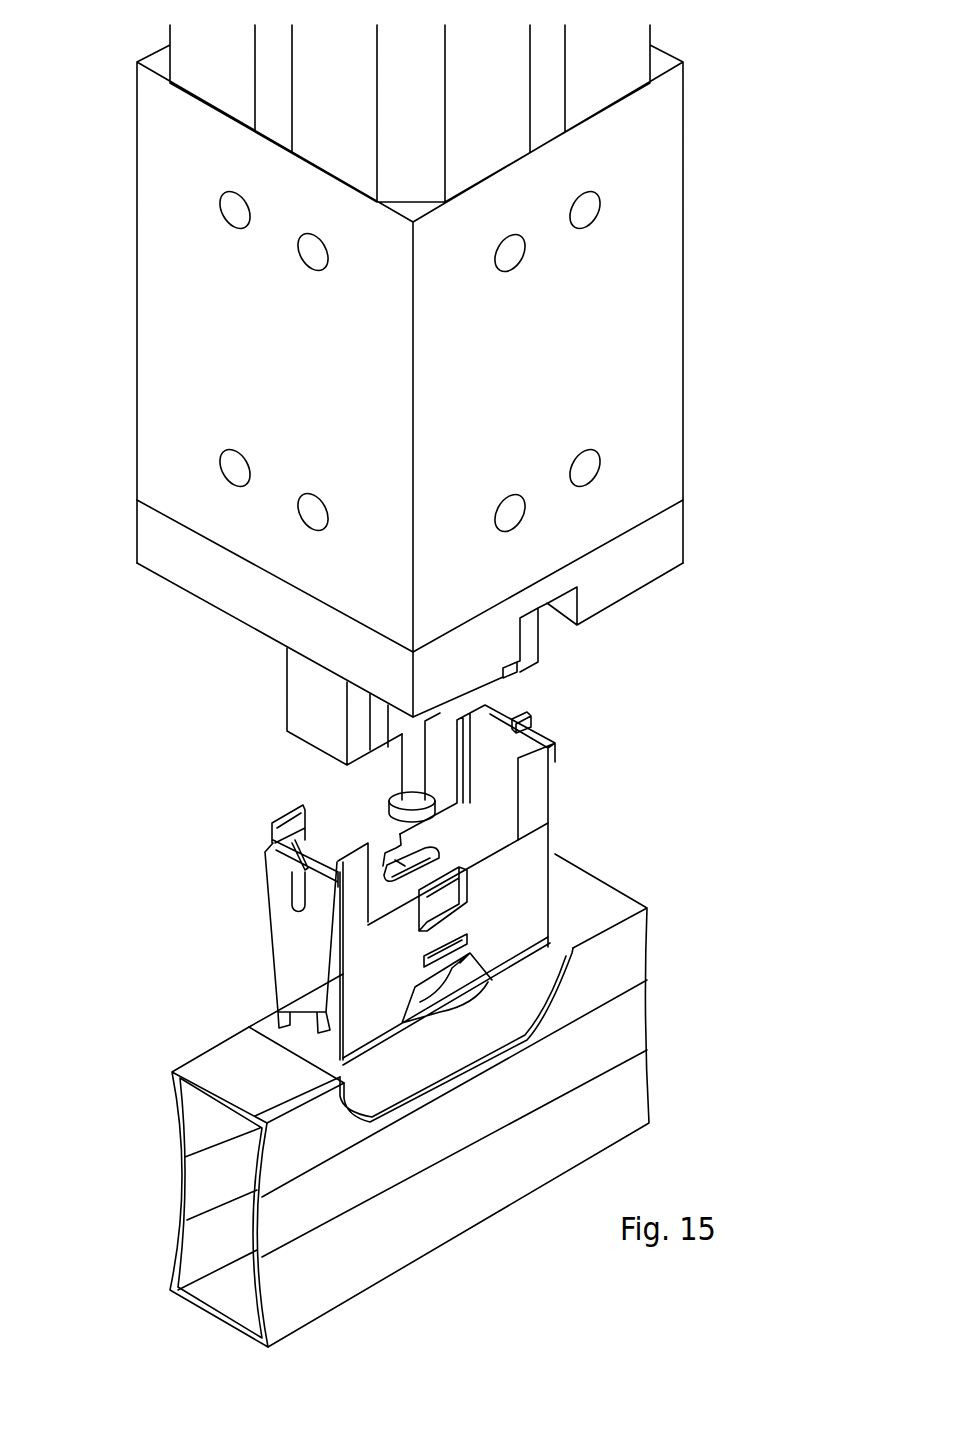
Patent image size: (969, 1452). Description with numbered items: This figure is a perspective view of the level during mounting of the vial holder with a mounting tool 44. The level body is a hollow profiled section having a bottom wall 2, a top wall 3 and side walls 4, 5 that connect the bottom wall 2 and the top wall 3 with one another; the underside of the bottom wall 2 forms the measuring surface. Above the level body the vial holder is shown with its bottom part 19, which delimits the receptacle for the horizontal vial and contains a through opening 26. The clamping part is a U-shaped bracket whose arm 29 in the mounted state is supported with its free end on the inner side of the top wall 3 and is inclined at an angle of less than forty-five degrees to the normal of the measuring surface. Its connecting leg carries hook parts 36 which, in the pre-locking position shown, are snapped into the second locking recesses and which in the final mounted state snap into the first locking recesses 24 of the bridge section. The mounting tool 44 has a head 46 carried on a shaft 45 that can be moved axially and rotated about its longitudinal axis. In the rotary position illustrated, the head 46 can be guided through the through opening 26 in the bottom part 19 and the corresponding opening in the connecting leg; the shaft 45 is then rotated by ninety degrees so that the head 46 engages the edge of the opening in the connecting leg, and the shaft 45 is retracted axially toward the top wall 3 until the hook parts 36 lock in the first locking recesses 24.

The bottom wall 2 is at (363, 1100).
The top wall 3 is at (215, 1092).
The side wall 4 is at (182, 1180).
The side wall 5 is at (411, 1216).
The bottom part 19 is at (537, 885).
The first locking recess 24 is at (445, 882).
The through opening 26 is at (430, 852).
The arm 29 is at (288, 927).
The hook part 36 is at (468, 935).
The mounting tool 44 is at (152, 638).
The shaft 45 is at (413, 772).
The head 46 is at (395, 815).